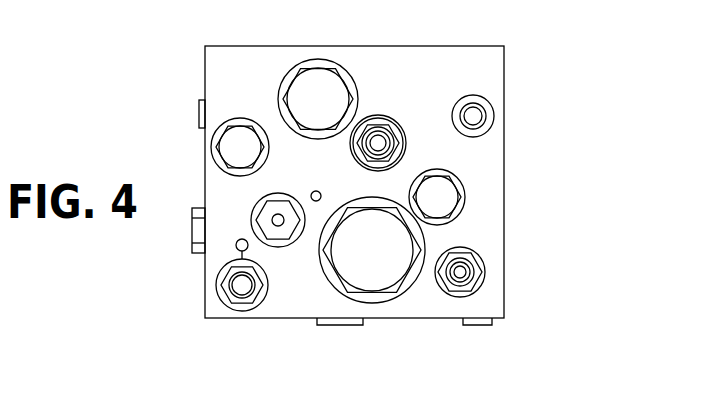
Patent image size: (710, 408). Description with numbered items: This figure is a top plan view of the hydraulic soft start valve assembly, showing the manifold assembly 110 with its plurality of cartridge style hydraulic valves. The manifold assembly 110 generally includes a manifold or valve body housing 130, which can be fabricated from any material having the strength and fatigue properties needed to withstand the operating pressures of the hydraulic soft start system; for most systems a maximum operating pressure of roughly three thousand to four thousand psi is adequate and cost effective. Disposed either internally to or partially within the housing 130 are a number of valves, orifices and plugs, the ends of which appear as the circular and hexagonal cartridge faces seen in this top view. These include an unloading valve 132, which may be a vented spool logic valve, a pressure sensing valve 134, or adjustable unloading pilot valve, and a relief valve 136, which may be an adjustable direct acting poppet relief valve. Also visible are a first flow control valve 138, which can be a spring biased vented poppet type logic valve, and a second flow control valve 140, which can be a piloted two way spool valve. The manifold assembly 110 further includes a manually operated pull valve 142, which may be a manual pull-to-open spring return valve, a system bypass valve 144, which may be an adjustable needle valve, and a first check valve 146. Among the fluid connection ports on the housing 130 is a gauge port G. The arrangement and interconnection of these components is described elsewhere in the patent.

The manifold assembly 110 is at (575, 163).
The valve body housing 130 is at (483, 70).
The unloading valve 132 is at (437, 196).
The pressure sensing valve 134 is at (380, 122).
The relief valve 136 is at (462, 272).
The first flow control valve 138 is at (375, 268).
The second flow control valve 140 is at (318, 86).
The manually operated pull valve 142 is at (279, 220).
The system bypass valve 144 is at (242, 285).
The first check valve 146 is at (240, 147).
The gauge port G is at (476, 114).